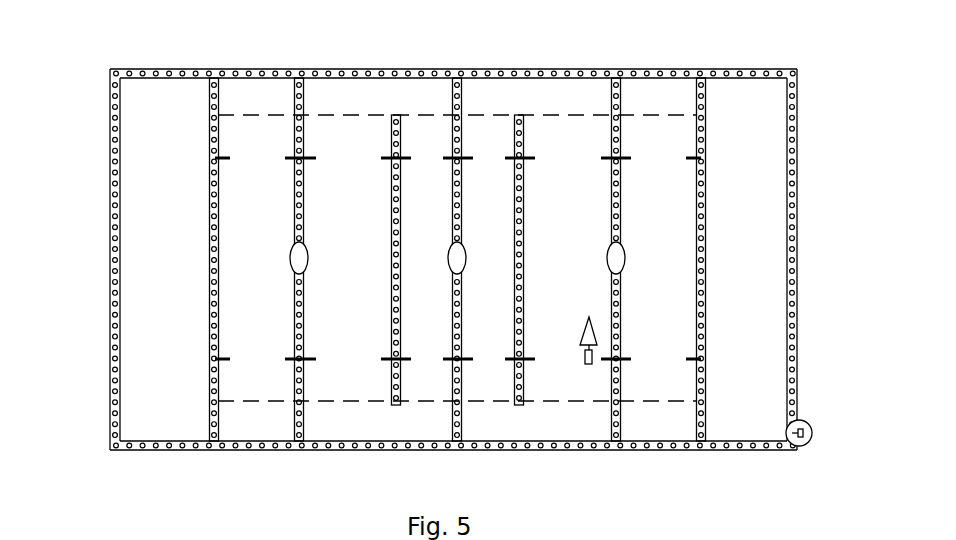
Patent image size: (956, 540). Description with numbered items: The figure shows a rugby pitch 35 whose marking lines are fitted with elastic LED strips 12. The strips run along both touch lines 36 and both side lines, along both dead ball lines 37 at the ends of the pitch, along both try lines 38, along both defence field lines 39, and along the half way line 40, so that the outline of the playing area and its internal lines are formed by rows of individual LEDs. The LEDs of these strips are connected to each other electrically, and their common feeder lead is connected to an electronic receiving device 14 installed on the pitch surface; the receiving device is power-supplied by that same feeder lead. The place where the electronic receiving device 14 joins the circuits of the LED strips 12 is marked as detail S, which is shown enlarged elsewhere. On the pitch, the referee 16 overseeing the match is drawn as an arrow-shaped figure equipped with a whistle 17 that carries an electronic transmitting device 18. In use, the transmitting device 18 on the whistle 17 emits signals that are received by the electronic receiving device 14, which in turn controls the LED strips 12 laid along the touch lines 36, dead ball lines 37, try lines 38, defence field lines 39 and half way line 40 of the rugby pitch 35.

The elastic LED strips 12 is at (298, 215).
The electronic receiving device 14 is at (801, 445).
The referee 16 is at (587, 343).
The whistle 17 is at (572, 481).
The electronic transmitting device 18 is at (587, 364).
The rugby pitch 35 is at (732, 160).
The touch lines 36 is at (219, 70).
The dead ball lines 37 is at (797, 113).
The try lines 38 is at (213, 118).
The defence field lines 39 is at (295, 428).
The half way line 40 is at (462, 130).
The detail of connection of the electronic receiving device S is at (845, 404).